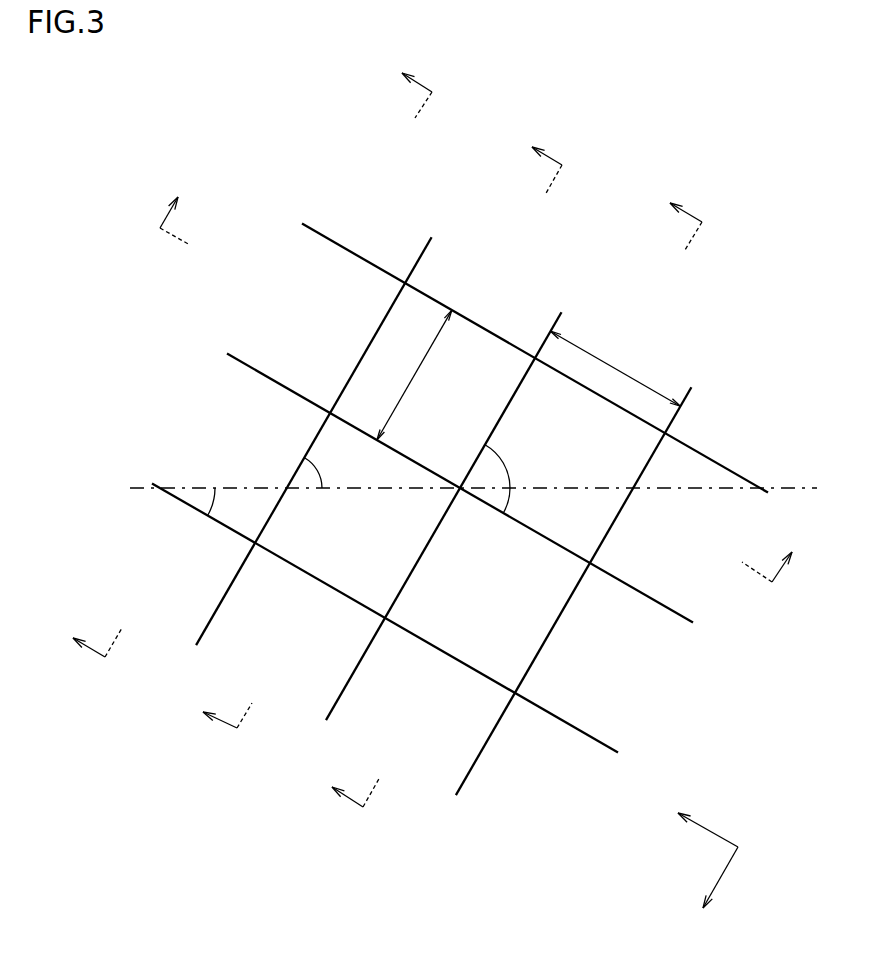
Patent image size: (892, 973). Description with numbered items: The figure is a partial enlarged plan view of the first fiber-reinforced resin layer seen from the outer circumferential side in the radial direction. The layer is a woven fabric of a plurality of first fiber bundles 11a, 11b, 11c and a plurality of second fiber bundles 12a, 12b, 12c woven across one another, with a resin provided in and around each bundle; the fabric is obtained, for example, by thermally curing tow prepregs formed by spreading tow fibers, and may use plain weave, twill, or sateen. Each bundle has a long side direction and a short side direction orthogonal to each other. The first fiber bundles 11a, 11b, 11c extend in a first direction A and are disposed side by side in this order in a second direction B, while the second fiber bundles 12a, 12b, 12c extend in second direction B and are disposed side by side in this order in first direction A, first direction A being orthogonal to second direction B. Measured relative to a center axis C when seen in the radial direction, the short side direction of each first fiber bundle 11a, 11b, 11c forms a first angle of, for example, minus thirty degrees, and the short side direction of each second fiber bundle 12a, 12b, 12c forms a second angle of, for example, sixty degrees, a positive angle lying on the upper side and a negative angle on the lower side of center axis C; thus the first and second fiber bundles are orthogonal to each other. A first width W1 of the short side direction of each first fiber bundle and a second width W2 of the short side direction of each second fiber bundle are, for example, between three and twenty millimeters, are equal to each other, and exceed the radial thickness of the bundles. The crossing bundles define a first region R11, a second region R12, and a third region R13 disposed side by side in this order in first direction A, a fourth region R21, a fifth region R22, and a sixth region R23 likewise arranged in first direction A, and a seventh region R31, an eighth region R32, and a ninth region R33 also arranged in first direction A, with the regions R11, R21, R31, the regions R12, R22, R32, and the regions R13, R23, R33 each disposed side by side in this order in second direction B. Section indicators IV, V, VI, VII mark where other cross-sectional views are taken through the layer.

The first fiber bundle 11a is at (633, 327).
The first fiber bundle 11b is at (497, 267).
The first fiber bundle 11c is at (382, 217).
The second fiber bundle 12a is at (275, 292).
The second fiber bundle 12b is at (200, 422).
The second fiber bundle 12c is at (125, 550).
The center axis C is at (778, 485).
The first region R11 is at (588, 423).
The second region R12 is at (490, 593).
The third region R13 is at (420, 715).
The fourth region R21 is at (465, 403).
The fifth region R22 is at (358, 518).
The sixth region R23 is at (288, 640).
The seventh region R31 is at (305, 315).
The eighth region R32 is at (230, 446).
The ninth region R33 is at (160, 570).
The first width W1 is at (616, 368).
The second width W2 is at (414, 375).
The first direction A is at (714, 892).
The second direction B is at (698, 822).
The section IV is at (505, 499).
The section V is at (373, 430).
The section VI is at (240, 358).
The section VII is at (487, 376).